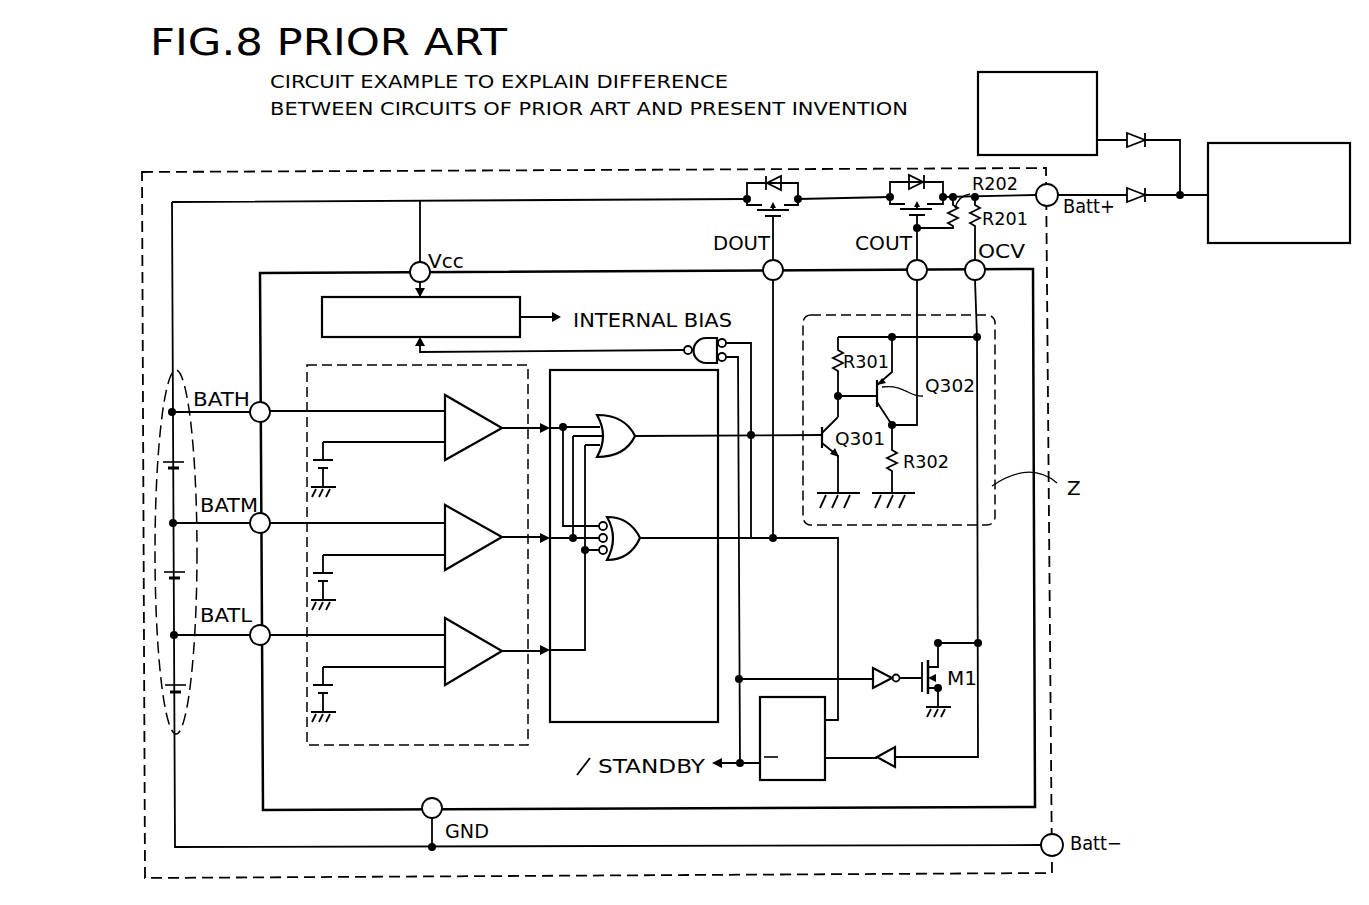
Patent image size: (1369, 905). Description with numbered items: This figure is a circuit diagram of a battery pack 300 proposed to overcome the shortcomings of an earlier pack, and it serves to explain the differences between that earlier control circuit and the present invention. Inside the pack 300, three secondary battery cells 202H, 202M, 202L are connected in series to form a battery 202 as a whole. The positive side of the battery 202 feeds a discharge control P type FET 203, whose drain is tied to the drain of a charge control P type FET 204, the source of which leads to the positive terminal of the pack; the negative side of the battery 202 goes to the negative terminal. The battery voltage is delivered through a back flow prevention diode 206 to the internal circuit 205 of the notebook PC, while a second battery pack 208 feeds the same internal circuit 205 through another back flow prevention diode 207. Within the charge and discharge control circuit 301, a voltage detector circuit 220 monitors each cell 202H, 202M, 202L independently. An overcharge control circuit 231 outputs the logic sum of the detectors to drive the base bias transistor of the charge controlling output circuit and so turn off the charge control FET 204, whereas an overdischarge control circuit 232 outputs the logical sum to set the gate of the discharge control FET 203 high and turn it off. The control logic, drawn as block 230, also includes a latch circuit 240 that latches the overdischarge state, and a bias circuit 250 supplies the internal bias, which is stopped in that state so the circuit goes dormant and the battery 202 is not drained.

The battery pack 300 is at (355, 163).
The charge and discharge control circuit 301 is at (1040, 420).
The battery 202 is at (133, 552).
The secondary battery cell 202H is at (165, 465).
The secondary battery cell 202M is at (167, 577).
The secondary battery cell 202L is at (165, 689).
The discharge control P type field effect transistor 203 is at (763, 182).
The charge control P type field effect transistor 204 is at (907, 180).
The internal circuit 205 is at (1234, 144).
The diode D2 206 is at (1133, 206).
The diode D1 207 is at (1147, 133).
The secondary battery pack 208 is at (982, 100).
The voltage detector circuit 220 is at (478, 744).
The control circuit 230 is at (634, 563).
The overcharge control circuit 231 is at (612, 420).
The overdischarge control circuit 232 is at (620, 523).
The latch circuit 240 is at (827, 772).
The bias circuit 250 is at (513, 299).